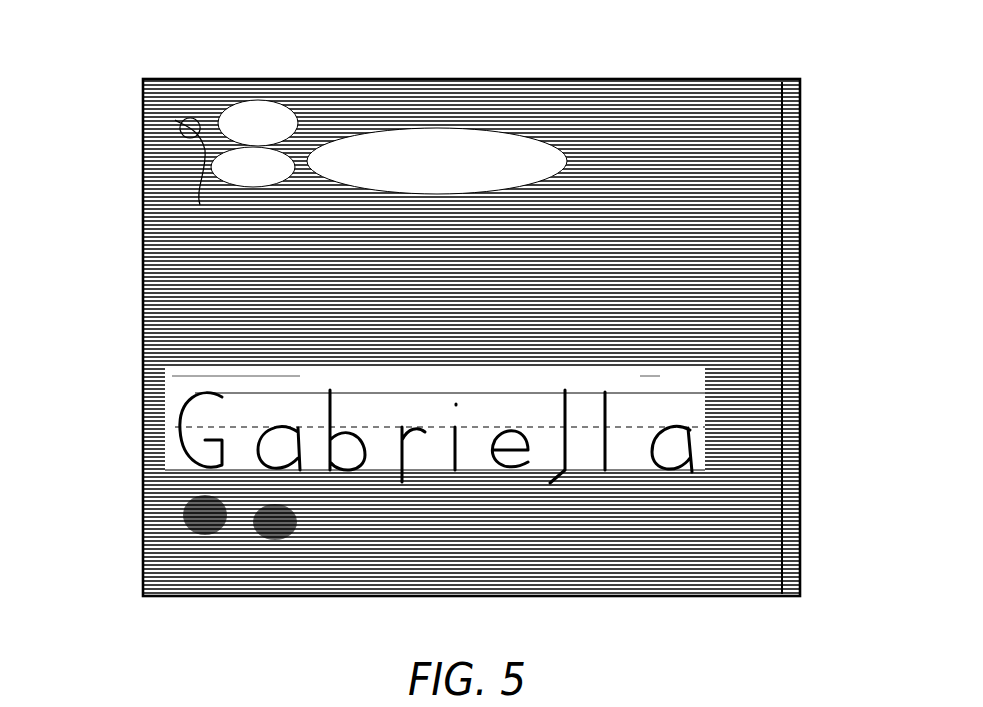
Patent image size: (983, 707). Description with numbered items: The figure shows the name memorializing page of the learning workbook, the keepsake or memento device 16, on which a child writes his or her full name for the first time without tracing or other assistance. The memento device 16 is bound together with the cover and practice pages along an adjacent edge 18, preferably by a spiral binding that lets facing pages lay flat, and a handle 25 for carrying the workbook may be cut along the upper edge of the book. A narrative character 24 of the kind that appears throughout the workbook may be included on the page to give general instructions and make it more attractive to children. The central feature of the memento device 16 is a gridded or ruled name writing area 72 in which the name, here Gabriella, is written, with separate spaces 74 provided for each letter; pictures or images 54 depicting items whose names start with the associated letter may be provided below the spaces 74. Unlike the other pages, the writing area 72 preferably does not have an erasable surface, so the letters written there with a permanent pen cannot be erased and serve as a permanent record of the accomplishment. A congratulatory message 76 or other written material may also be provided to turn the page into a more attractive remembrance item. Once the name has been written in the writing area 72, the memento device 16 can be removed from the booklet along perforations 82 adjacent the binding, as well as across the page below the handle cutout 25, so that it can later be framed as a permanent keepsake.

The keepsake device 16 is at (97, 75).
The adjacent edge 18 is at (800, 277).
The narrative character 24 is at (185, 120).
The handle 25 is at (432, 143).
The pictures or images 54 is at (340, 527).
The name writing area 72 is at (692, 418).
The spaces 74 is at (410, 468).
The congratulatory message 76 is at (561, 268).
The perforations 82 is at (730, 243).